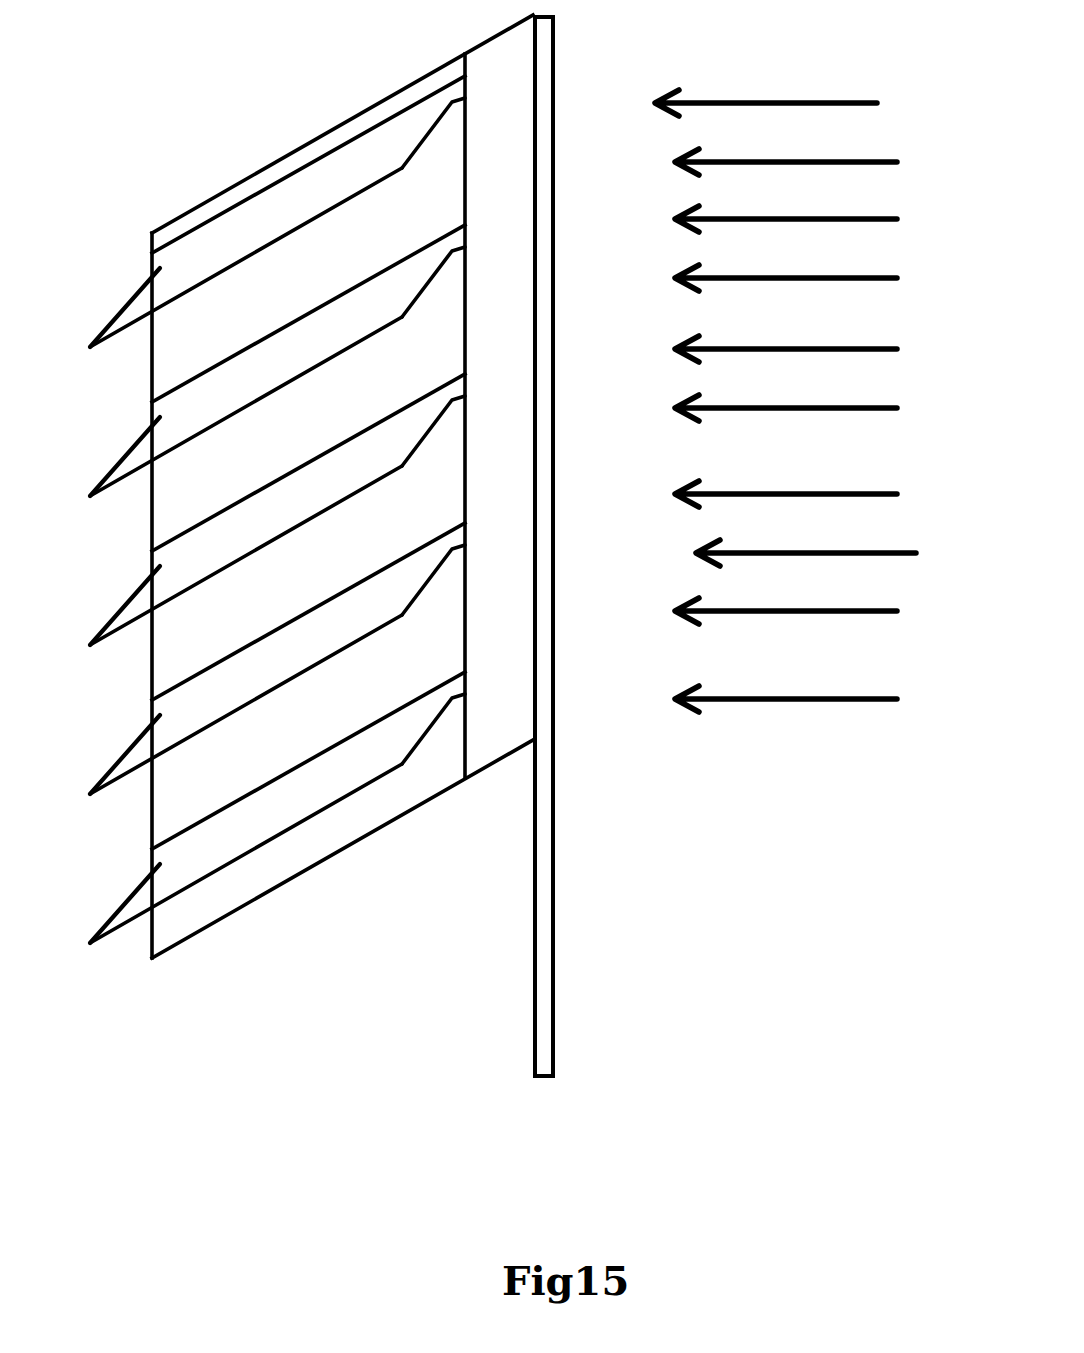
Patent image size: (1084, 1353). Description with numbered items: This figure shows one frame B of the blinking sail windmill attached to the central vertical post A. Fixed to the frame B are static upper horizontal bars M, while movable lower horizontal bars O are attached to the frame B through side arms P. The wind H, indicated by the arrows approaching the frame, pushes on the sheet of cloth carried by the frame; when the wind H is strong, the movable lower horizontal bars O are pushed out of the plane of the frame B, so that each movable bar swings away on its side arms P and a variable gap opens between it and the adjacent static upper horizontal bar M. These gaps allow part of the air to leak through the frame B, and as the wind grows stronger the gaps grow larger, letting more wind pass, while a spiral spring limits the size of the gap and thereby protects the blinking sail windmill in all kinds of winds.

The central vertical post A is at (556, 935).
The frame B is at (454, 794).
The wind H is at (760, 718).
The static upper horizontal bars M is at (375, 736).
The movable lower horizontal bars O is at (207, 622).
The side arms P is at (435, 736).